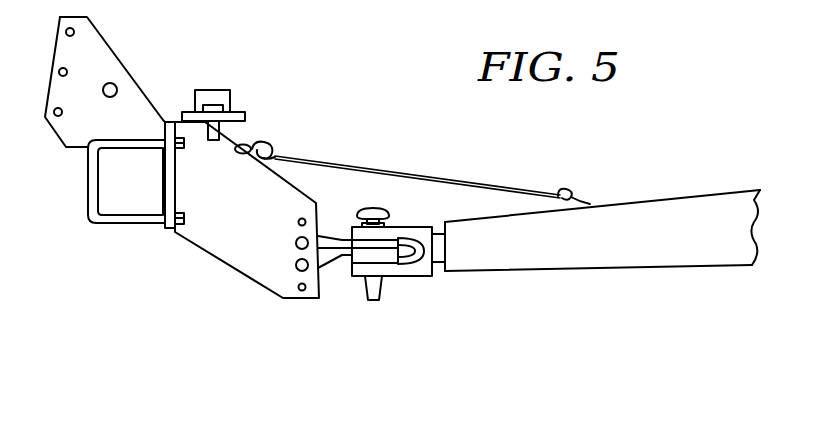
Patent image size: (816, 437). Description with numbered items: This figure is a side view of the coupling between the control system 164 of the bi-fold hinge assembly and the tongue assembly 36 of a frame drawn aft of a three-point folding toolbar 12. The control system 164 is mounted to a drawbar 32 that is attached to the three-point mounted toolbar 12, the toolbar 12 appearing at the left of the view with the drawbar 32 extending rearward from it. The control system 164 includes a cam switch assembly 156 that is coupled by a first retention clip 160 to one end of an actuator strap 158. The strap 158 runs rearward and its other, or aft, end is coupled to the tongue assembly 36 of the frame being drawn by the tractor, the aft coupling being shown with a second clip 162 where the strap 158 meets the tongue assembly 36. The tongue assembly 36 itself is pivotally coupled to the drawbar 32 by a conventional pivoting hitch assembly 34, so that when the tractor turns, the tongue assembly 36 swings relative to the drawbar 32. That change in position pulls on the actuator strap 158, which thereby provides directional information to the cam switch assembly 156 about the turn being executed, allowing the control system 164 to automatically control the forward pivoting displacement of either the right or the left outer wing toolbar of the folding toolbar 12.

The toolbar 12 is at (99, 219).
The drawbar 32 is at (260, 211).
The pivoting hitch assembly 34 is at (397, 277).
The tongue assembly 36 is at (687, 198).
The cam switch assembly 156 is at (244, 144).
The actuator strap 158 is at (465, 181).
The first retention clip 160 is at (273, 144).
The hook 162 is at (583, 200).
The control system 164 is at (253, 117).